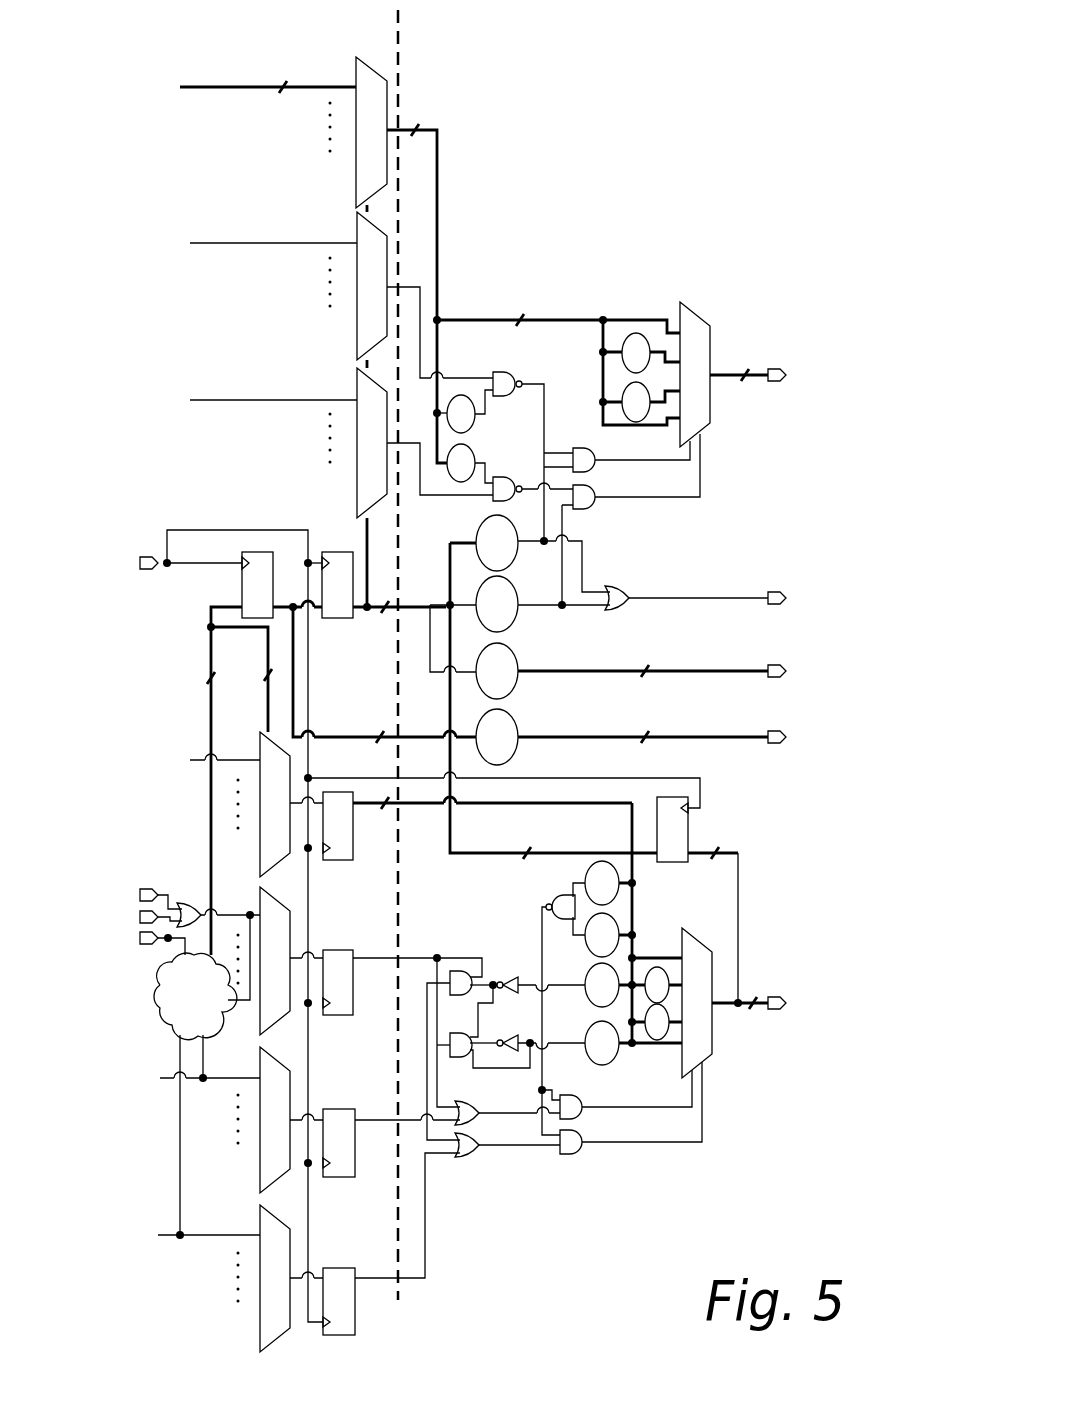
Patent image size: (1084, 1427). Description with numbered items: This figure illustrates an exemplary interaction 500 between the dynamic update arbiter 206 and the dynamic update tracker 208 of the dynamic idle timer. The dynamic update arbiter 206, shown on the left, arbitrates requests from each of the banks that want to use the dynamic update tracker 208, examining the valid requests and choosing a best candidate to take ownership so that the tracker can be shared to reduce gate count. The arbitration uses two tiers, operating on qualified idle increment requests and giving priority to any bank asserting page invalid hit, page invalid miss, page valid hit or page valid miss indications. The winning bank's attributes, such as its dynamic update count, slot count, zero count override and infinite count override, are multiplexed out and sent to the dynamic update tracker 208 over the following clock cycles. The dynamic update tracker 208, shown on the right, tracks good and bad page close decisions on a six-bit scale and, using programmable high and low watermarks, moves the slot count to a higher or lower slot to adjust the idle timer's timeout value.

The dynamic update arbiter 206 is at (362, 42).
The dynamic update tracker 208 is at (722, 42).
The interaction 500 is at (776, 158).